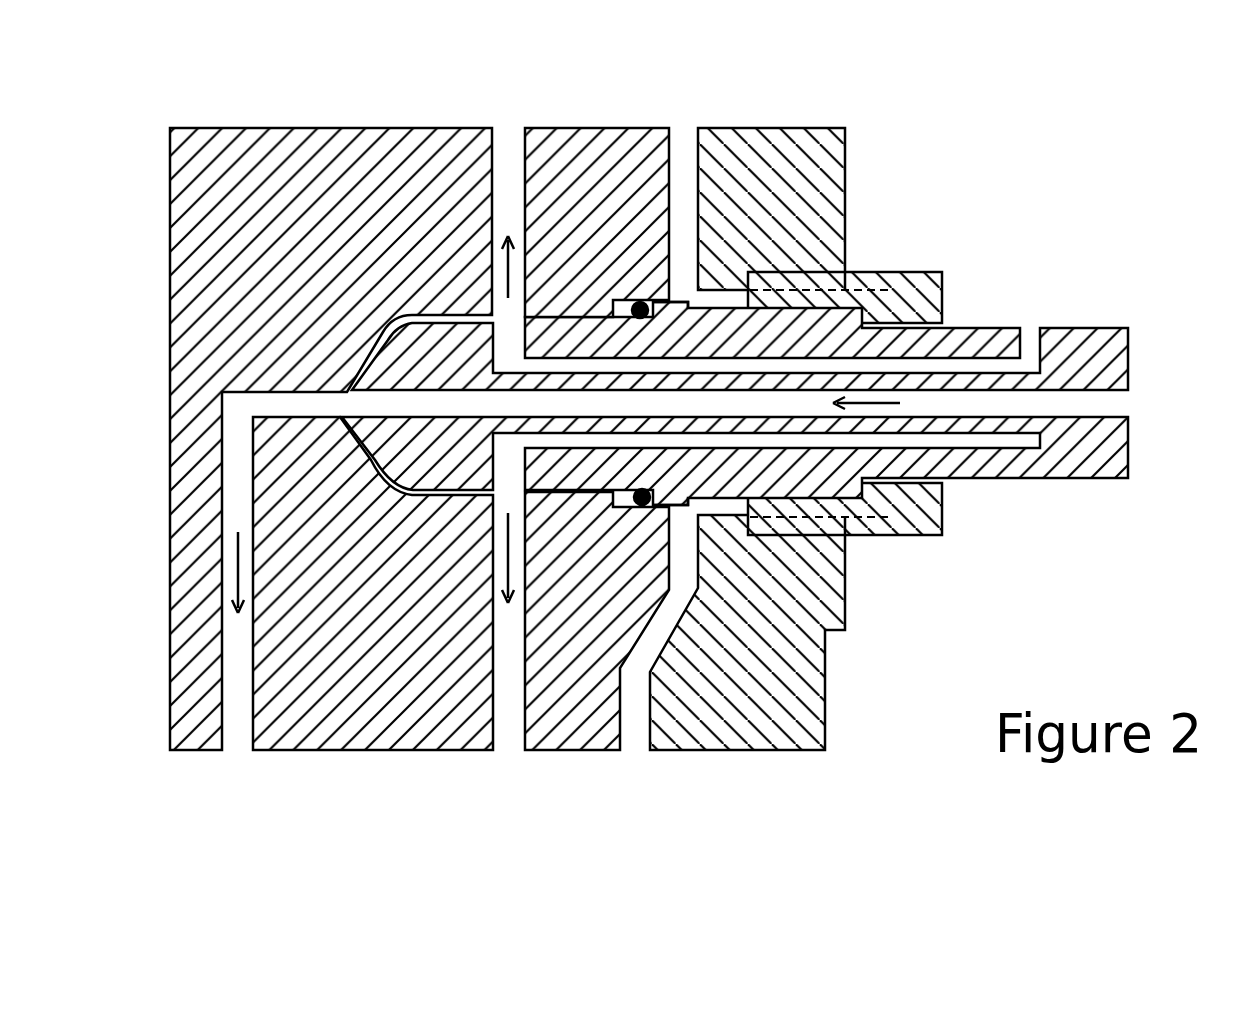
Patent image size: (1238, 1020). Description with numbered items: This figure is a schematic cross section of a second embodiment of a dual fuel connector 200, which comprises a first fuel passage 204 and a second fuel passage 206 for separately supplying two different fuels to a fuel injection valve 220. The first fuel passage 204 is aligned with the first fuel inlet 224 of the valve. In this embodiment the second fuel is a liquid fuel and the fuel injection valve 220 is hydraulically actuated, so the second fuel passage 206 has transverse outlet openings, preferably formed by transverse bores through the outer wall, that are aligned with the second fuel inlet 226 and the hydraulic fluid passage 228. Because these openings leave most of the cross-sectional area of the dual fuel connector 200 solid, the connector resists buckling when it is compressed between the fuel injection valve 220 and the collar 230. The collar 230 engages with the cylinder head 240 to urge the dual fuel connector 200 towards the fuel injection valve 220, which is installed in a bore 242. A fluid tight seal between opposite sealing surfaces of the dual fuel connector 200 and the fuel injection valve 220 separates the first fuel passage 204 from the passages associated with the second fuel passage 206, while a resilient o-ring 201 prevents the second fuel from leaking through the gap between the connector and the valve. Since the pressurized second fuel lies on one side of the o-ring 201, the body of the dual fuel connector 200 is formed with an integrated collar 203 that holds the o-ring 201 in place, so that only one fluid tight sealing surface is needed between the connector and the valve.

The dual fuel connector 200 is at (973, 332).
The o-ring 201 is at (643, 303).
The integrated collar 203 is at (680, 300).
The first fuel passage 204 is at (947, 398).
The second fuel passage 206 is at (975, 443).
The fuel injection valve 220 is at (253, 318).
The first fuel inlet 224 is at (295, 407).
The second fuel inlet 226 is at (513, 713).
The hydraulic fluid passage 228 is at (508, 152).
The collar 230 is at (910, 272).
The cylinder head 240 is at (737, 678).
The bore 242 is at (647, 698).